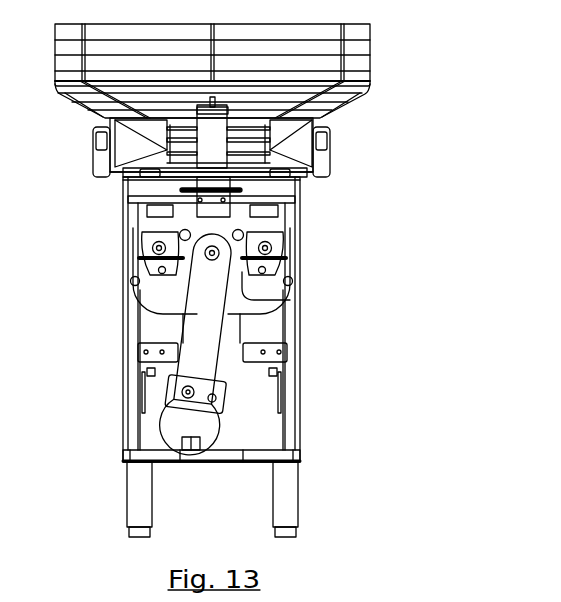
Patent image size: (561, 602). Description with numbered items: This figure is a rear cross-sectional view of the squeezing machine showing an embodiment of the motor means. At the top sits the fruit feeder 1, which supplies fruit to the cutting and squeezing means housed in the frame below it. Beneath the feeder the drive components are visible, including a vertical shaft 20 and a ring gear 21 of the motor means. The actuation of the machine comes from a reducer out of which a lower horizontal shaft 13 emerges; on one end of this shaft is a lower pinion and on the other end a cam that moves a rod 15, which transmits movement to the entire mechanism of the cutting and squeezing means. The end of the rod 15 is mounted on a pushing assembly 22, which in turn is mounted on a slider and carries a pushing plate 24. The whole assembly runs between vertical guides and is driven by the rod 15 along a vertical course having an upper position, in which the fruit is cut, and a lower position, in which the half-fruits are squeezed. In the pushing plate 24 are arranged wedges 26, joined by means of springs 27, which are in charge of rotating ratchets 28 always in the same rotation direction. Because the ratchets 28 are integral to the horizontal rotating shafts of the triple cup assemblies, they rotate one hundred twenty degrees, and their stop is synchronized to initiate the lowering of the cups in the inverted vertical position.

The vertical shaft 20 is at (368, 96).
The fruit feeder 1 is at (323, 153).
The ring gear 21 is at (242, 190).
The pushing assembly 22 is at (216, 251).
The springs 27 is at (156, 250).
The wedges 26 is at (160, 261).
The pushing plate 24 is at (263, 283).
The rod 15 is at (290, 320).
The lower horizontal shaft 13 is at (213, 403).
The ratchets 28 is at (245, 236).